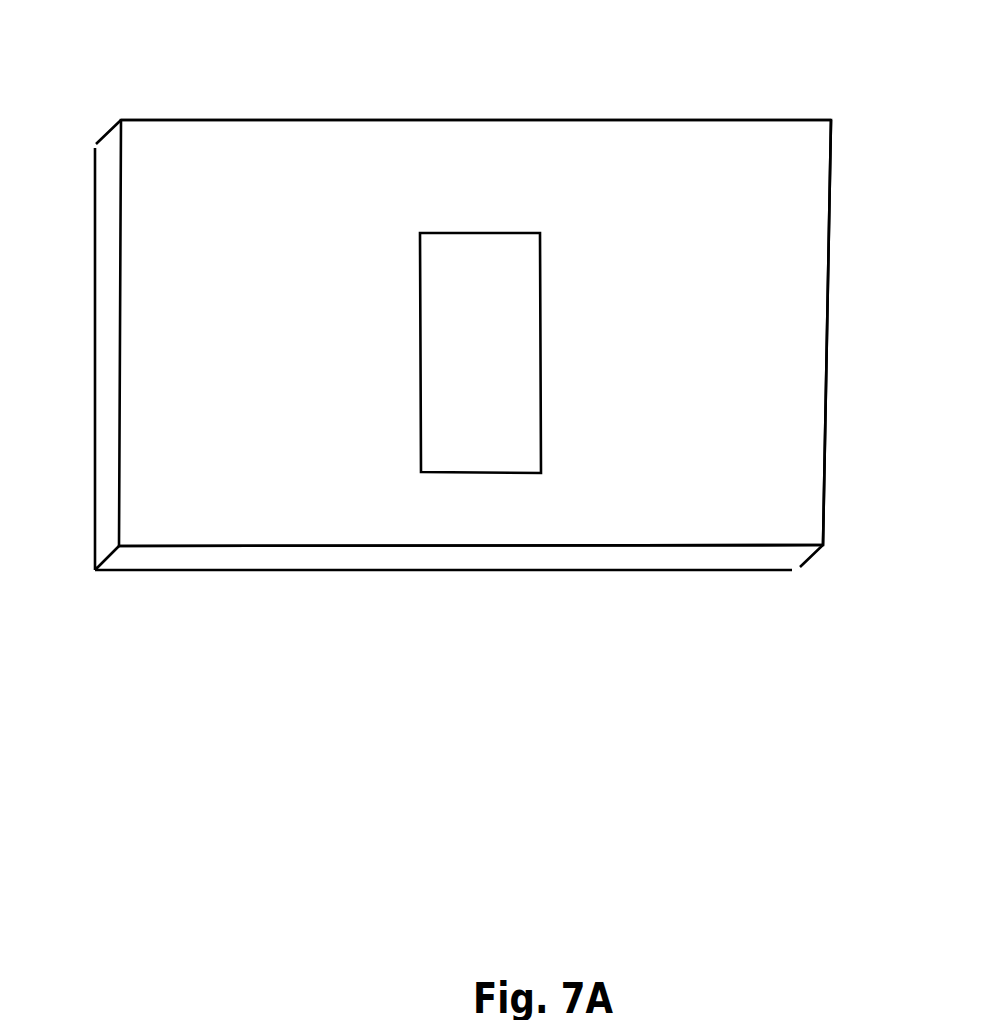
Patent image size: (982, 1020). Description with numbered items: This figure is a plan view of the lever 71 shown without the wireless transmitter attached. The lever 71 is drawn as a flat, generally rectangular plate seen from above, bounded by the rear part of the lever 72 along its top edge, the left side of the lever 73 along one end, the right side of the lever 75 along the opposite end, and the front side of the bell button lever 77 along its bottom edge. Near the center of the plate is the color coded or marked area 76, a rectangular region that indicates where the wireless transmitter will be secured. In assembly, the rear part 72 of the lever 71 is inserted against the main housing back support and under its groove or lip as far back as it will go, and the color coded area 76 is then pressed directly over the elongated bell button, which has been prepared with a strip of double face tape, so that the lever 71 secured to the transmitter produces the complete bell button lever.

The lever 71 is at (370, 343).
The rear part of lever 72 is at (542, 120).
The left side of lever 73 is at (108, 407).
The right side of lever 75 is at (830, 412).
The color coded or marked area 76 is at (520, 383).
The front side of bell button lever 77 is at (542, 557).